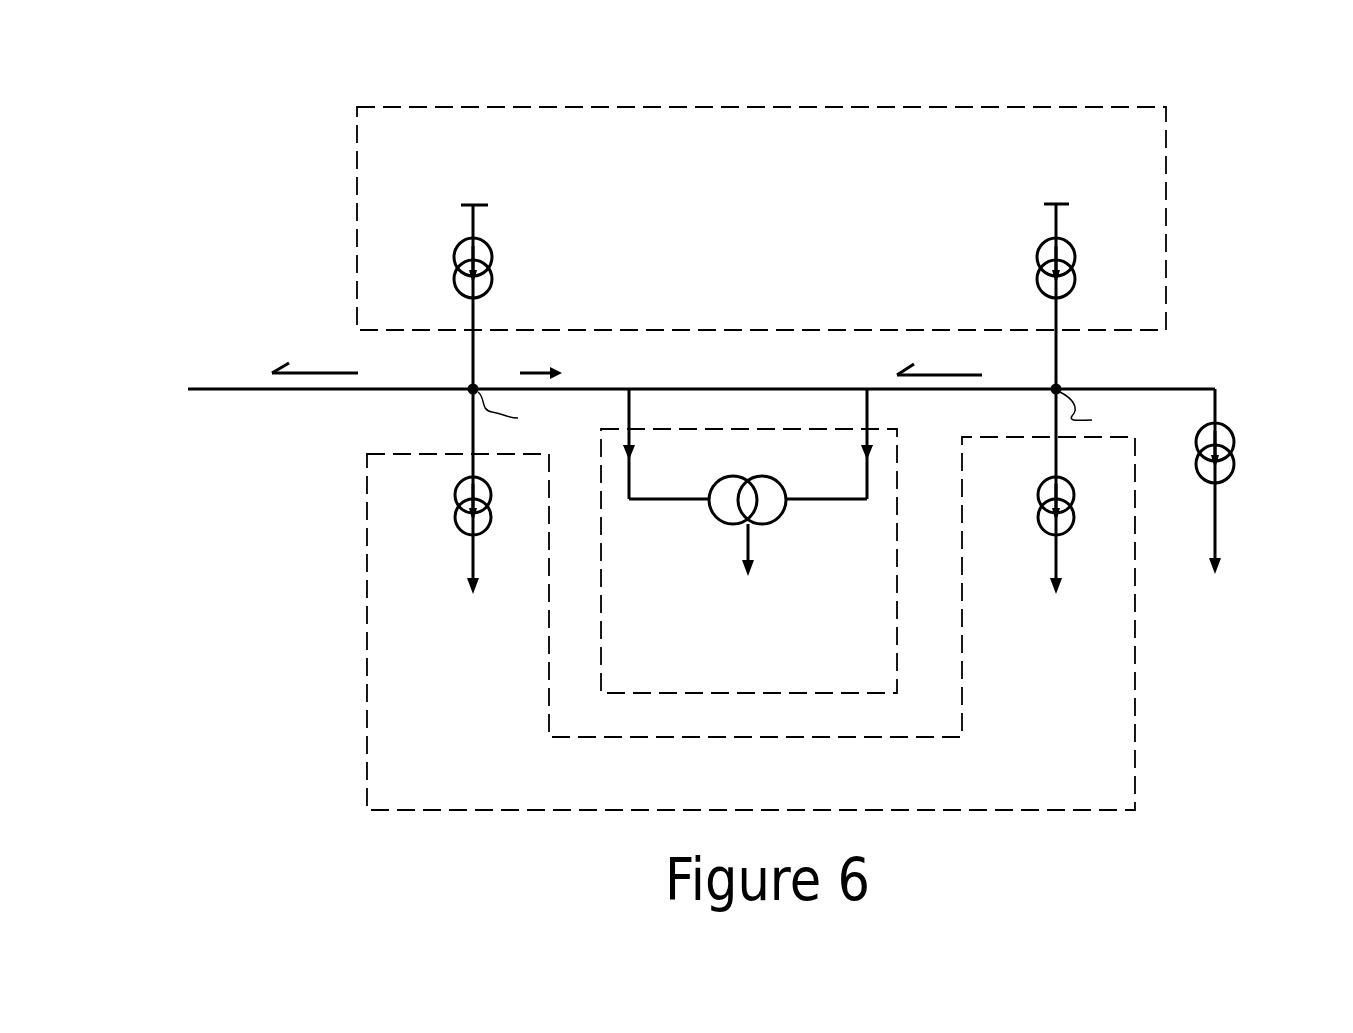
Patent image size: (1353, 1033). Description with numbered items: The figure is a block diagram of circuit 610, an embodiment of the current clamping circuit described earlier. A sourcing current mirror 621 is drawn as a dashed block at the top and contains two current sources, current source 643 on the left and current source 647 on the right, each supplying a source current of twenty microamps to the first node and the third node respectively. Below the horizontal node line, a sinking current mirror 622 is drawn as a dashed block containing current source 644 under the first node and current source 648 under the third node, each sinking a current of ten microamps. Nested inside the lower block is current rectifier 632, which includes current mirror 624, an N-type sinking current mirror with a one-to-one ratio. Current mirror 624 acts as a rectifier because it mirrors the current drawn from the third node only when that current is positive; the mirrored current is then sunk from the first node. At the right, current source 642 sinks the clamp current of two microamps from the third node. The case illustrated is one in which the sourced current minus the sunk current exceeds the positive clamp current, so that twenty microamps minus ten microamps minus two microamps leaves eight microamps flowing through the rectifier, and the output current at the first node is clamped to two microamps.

The circuit 610 is at (752, 34).
The current mirror 621 is at (407, 137).
The current mirror 622 is at (420, 799).
The current rectifier 632 is at (656, 681).
The current mirror 624 is at (772, 479).
The current source 642 is at (1236, 438).
The current source 643 is at (456, 262).
The current source 644 is at (457, 501).
The current source 647 is at (1040, 258).
The current source 648 is at (1038, 500).